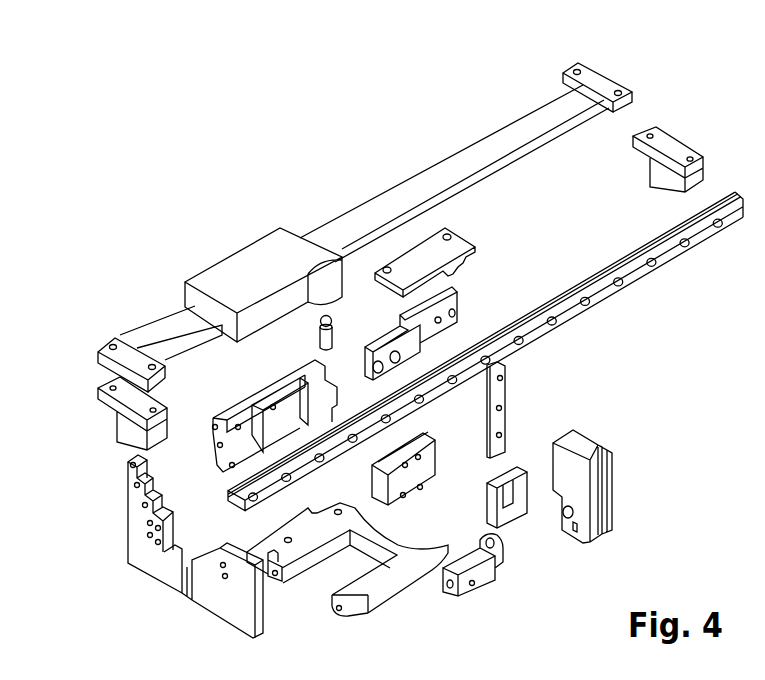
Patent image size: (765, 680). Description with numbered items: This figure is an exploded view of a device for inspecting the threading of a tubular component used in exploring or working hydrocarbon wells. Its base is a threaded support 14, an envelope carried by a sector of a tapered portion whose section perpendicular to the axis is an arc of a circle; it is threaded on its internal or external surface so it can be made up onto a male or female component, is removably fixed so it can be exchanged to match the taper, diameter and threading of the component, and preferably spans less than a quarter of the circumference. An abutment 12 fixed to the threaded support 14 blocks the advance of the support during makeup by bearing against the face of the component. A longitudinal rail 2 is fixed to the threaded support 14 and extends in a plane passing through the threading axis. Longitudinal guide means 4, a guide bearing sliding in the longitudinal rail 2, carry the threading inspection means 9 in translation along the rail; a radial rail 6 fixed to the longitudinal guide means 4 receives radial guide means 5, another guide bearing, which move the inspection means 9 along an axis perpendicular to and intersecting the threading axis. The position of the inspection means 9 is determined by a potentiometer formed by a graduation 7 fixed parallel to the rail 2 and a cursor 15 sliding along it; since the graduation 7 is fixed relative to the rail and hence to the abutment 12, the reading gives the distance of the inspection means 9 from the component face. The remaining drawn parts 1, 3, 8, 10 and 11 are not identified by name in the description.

The slide carriage block 1 is at (256, 396).
The longitudinal rail 2 is at (646, 279).
The stop block 3 is at (466, 296).
The longitudinal guide means 4 is at (437, 427).
The radial guide means 5 is at (477, 497).
The radial rail 6 is at (514, 390).
The graduation 7 is at (500, 122).
The mounting bracket 8 is at (684, 129).
The threading inspection means 9 is at (565, 533).
The cover plate 10 is at (470, 227).
The pin 11 is at (312, 333).
The abutment 12 is at (119, 504).
The threaded support 14 is at (307, 579).
The cursor 15 is at (207, 252).